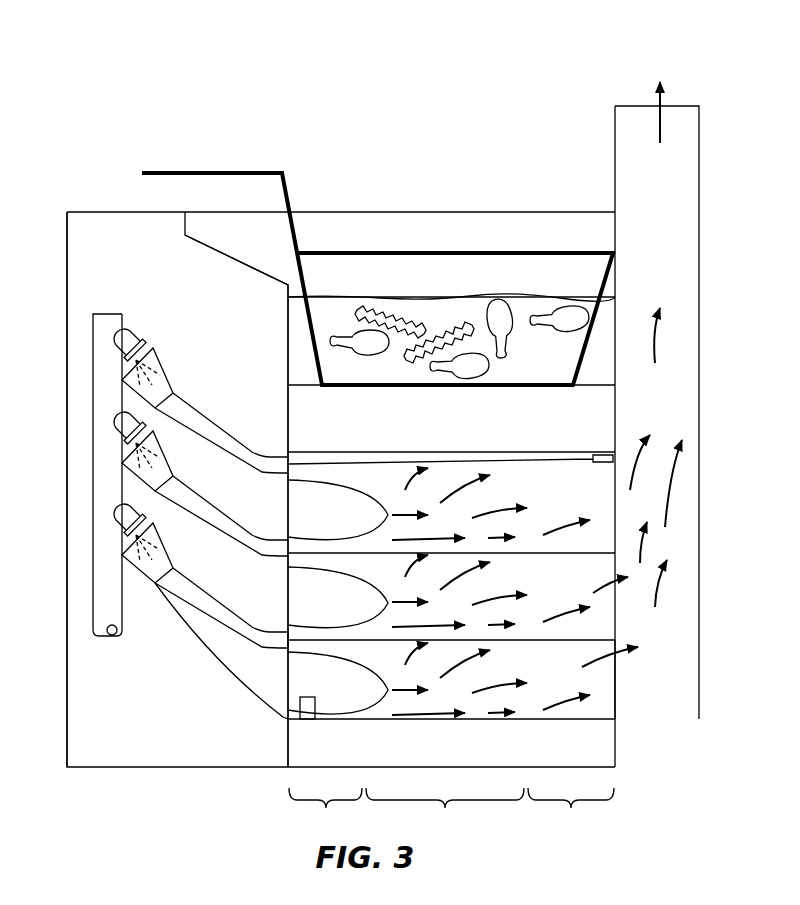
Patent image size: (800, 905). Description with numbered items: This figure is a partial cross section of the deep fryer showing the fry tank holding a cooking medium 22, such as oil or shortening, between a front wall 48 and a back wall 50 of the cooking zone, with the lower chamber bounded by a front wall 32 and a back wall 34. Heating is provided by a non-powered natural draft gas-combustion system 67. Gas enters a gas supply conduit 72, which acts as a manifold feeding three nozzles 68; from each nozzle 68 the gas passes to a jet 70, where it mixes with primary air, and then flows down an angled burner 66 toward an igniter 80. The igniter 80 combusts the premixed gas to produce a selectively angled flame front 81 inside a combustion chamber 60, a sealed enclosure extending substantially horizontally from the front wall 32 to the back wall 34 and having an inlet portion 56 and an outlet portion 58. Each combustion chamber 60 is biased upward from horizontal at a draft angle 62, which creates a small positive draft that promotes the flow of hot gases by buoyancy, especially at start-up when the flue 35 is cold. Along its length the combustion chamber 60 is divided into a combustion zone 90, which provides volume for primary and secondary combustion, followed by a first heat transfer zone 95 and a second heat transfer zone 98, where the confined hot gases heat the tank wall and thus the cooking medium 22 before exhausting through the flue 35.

The cooking medium 22 is at (600, 353).
The front wall 32 is at (285, 633).
The back wall 34 is at (618, 595).
The flue 35 is at (635, 145).
The front wall 48 is at (288, 285).
The back wall 50 is at (615, 302).
The inlet portion 56 is at (280, 702).
The outlet portion 58 is at (618, 693).
The combustion chamber 60 is at (597, 502).
The draft angle 62 is at (344, 457).
The angled burner 66 is at (180, 622).
The natural draft gas-combustion system 67 is at (130, 664).
The nozzle 68 is at (127, 340).
The jet 70 is at (157, 363).
The gas supply conduit 72 is at (100, 348).
The igniter 80 is at (308, 713).
The flame front 81 is at (303, 524).
The combustion zone 90 is at (325, 811).
The first heat transfer zone 95 is at (445, 811).
The second heat transfer zone 98 is at (571, 811).